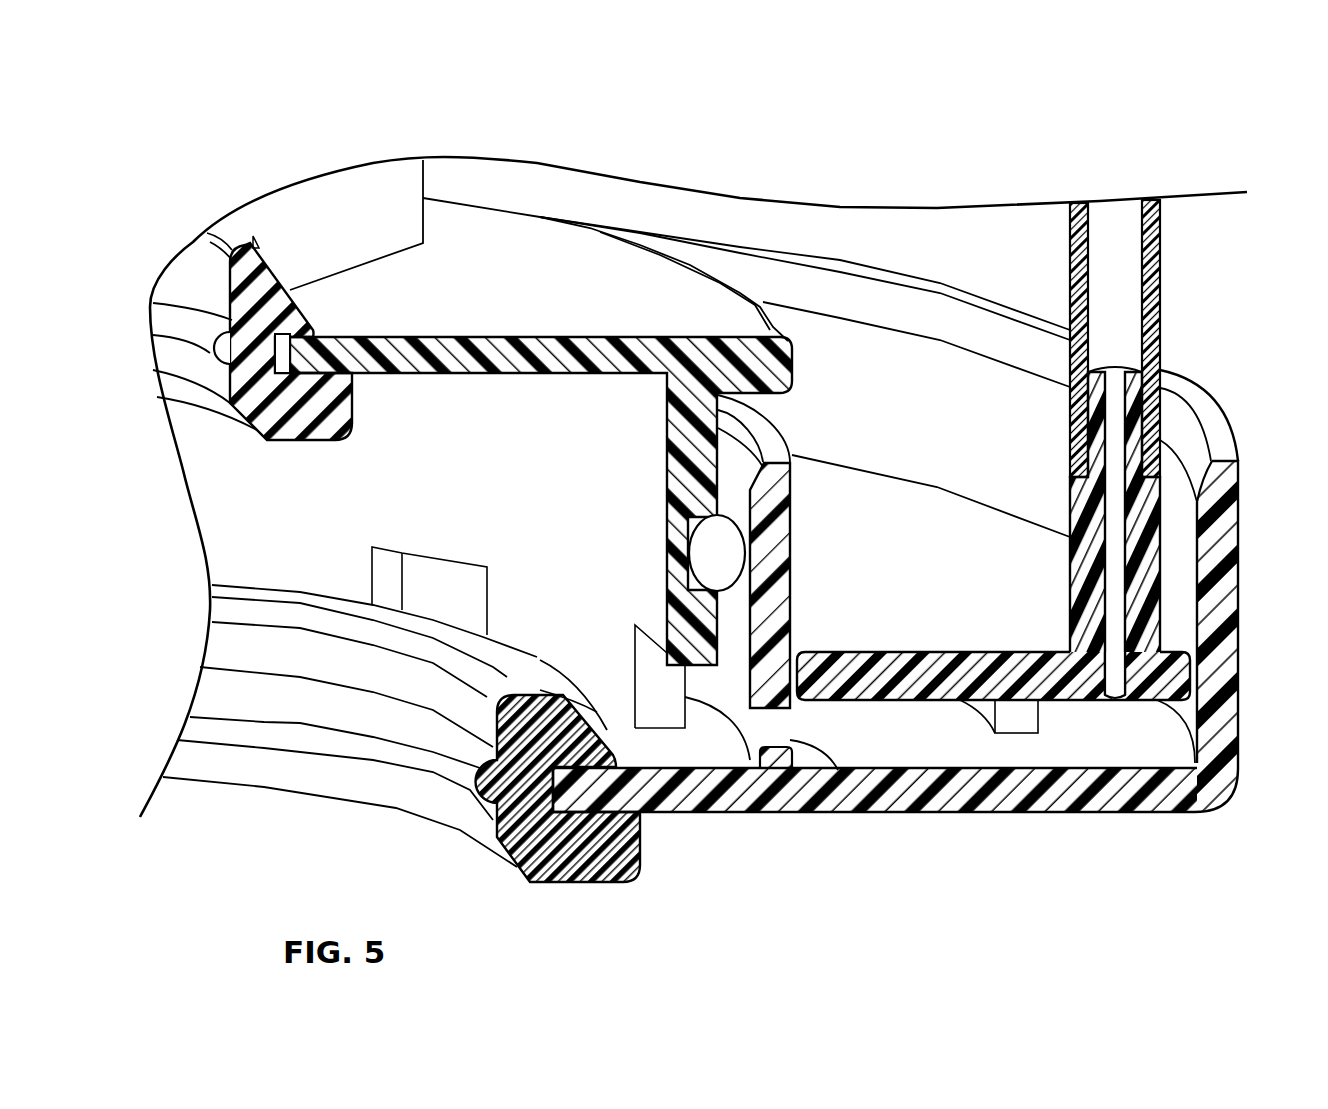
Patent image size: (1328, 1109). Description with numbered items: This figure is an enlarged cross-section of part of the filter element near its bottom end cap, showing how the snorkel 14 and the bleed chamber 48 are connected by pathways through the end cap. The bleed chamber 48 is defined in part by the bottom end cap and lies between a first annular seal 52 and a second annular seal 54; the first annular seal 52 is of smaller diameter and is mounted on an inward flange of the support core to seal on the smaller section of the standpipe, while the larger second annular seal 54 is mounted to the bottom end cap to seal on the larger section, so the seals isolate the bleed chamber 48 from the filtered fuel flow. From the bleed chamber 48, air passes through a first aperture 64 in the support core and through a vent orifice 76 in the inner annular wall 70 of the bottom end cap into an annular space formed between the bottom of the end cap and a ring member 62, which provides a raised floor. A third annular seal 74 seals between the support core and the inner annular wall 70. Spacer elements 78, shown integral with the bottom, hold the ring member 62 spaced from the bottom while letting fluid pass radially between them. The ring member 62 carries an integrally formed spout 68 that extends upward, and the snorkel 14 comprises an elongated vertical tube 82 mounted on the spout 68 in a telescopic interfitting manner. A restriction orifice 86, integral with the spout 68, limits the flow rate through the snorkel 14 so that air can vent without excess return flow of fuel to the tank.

The snorkel 14 is at (1173, 253).
The bleed chamber 48 is at (925, 737).
The first annular seal 52 is at (275, 417).
The second annular seal 54 is at (568, 867).
The ring member 62 is at (917, 663).
The first aperture 64 is at (433, 573).
The spout 68 is at (1142, 529).
The inner annular wall 70 is at (793, 540).
The third annular seal 74 is at (713, 543).
The vent orifice 76 is at (838, 772).
The spacer element 78 is at (1015, 720).
The tube 82 is at (1160, 322).
The restriction orifice 86 is at (1117, 597).